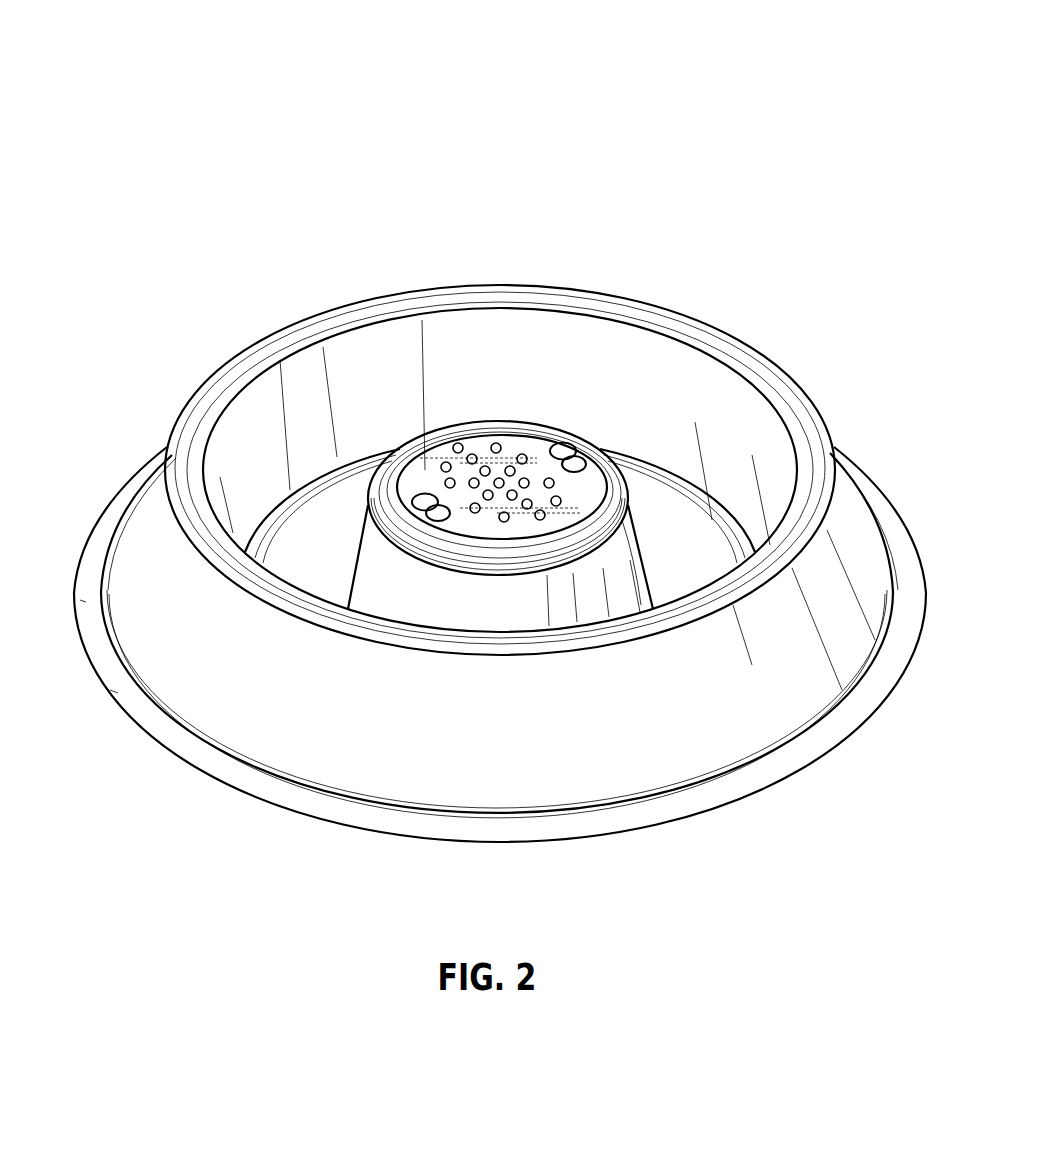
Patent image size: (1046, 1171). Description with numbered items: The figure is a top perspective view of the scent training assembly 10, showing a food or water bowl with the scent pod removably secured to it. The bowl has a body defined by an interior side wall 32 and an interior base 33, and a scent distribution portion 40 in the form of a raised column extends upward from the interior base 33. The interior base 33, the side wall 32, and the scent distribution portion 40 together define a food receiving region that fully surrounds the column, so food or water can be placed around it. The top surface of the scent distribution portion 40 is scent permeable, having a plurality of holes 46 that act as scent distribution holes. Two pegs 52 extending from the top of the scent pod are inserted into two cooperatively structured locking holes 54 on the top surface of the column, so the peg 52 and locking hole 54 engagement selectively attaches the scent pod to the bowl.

The pet feeding bowl assembly 10 is at (472, 41).
The side wall 32 is at (760, 447).
The interior base 33 is at (670, 520).
The scent distribution portion 40 is at (375, 557).
The holes 46 is at (458, 445).
The peg 52 is at (565, 449).
The locking hole 54 is at (421, 498).